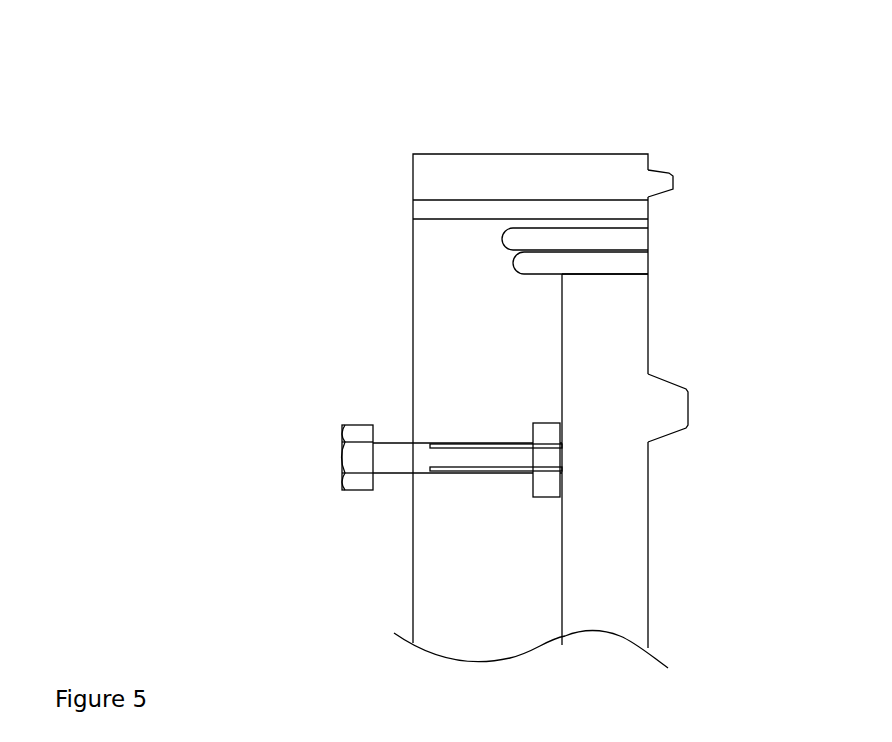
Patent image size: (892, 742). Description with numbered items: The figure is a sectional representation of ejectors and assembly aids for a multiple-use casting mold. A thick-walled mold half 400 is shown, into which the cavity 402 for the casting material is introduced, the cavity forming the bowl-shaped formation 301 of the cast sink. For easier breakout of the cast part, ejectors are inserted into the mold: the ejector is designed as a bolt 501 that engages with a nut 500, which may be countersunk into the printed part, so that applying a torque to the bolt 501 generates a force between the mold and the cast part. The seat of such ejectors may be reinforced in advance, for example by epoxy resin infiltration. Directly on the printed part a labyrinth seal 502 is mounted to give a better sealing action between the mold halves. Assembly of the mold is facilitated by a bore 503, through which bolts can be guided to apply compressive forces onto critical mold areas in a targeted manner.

The bowl-shaped formation 301 is at (672, 419).
The mold half 400 is at (475, 628).
The cavity 402 is at (610, 588).
The nut 500 is at (542, 478).
The bolt 501 is at (369, 440).
The labyrinth seal 502 is at (662, 180).
The bore 503 is at (463, 209).